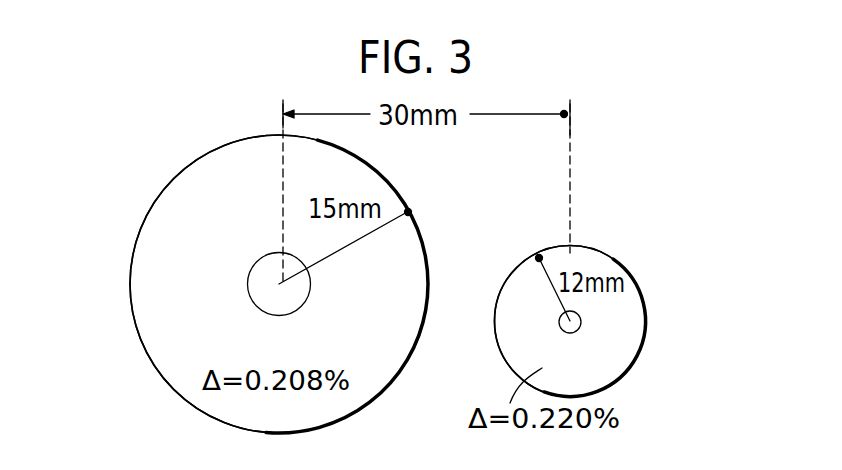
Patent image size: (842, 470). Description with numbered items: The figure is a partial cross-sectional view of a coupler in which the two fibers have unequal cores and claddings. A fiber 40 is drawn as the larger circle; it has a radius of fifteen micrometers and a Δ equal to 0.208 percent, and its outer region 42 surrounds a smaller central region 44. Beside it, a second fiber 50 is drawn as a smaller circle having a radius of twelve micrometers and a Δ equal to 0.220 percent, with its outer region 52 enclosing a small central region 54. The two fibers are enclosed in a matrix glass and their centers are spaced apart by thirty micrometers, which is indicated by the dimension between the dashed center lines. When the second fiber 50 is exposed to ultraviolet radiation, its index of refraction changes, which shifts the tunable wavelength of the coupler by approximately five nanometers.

The fiber 40 is at (155, 385).
The cladding of first optical fiber 42 is at (148, 322).
The core of first optical fiber 44 is at (258, 270).
The second fiber 50 is at (647, 382).
The cladding of second optical fiber 52 is at (633, 330).
The core of second optical fiber 54 is at (582, 320).